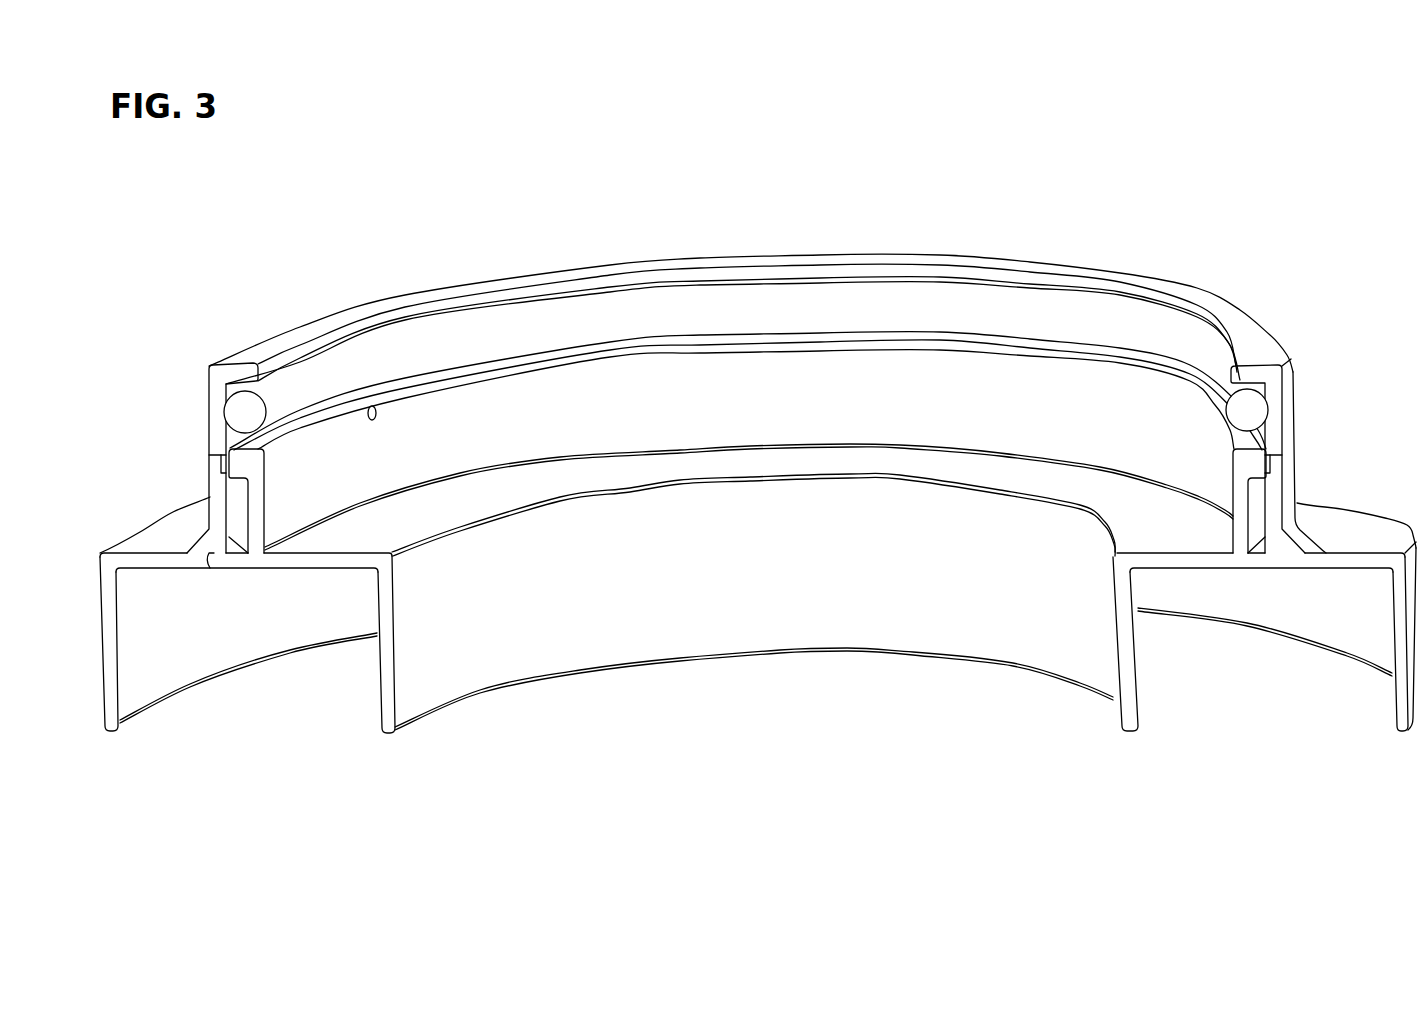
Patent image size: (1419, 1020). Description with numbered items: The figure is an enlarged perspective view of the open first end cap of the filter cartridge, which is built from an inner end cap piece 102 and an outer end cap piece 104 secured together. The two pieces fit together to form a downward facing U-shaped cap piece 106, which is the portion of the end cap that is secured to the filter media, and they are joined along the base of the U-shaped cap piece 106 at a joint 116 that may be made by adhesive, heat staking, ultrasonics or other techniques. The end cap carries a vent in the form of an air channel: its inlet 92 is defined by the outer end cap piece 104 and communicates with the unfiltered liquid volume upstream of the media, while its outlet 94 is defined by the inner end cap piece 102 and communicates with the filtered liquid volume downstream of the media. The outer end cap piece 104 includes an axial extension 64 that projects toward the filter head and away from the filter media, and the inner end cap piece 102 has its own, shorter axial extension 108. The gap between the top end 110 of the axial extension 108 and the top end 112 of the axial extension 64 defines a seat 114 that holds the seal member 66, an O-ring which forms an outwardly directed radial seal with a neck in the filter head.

The axial extension 64 is at (1290, 413).
The seal member 66 is at (783, 389).
The inlet 92 is at (222, 467).
The outlet 94 is at (377, 414).
The inner end cap piece 102 is at (389, 699).
The outer end cap piece 104 is at (108, 612).
The U-shaped cap piece 106 is at (195, 695).
The axial extension 108 is at (747, 442).
The top end 110 is at (1193, 381).
The top end 112 is at (1193, 308).
The seat 114 is at (1260, 393).
The joint 116 is at (209, 566).